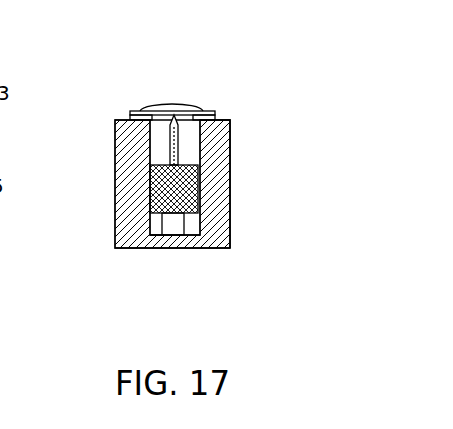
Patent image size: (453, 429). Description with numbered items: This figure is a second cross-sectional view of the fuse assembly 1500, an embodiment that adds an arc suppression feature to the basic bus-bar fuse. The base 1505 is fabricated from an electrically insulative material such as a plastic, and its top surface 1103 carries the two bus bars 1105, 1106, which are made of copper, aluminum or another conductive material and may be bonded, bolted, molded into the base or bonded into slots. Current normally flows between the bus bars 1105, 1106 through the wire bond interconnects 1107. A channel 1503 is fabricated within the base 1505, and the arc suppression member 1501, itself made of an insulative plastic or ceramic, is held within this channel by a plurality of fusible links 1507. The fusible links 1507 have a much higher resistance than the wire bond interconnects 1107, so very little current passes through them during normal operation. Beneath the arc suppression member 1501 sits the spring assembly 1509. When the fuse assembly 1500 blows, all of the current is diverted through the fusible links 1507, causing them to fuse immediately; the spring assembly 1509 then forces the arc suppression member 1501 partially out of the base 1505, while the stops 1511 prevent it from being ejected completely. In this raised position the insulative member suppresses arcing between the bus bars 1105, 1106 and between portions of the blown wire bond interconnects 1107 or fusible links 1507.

The fuse assembly 1500 is at (110, 102).
The wire bond interconnects 1107 is at (171, 96).
The top surface 1103 is at (230, 106).
The bus bar 1105 is at (194, 118).
The bus bar 1106 is at (136, 121).
The fusible links 1507 is at (199, 124).
The stops 1511 is at (149, 136).
The arc suppression member 1501 is at (150, 182).
The channel 1503 is at (153, 236).
The spring assembly 1509 is at (174, 222).
The base 1505 is at (220, 226).